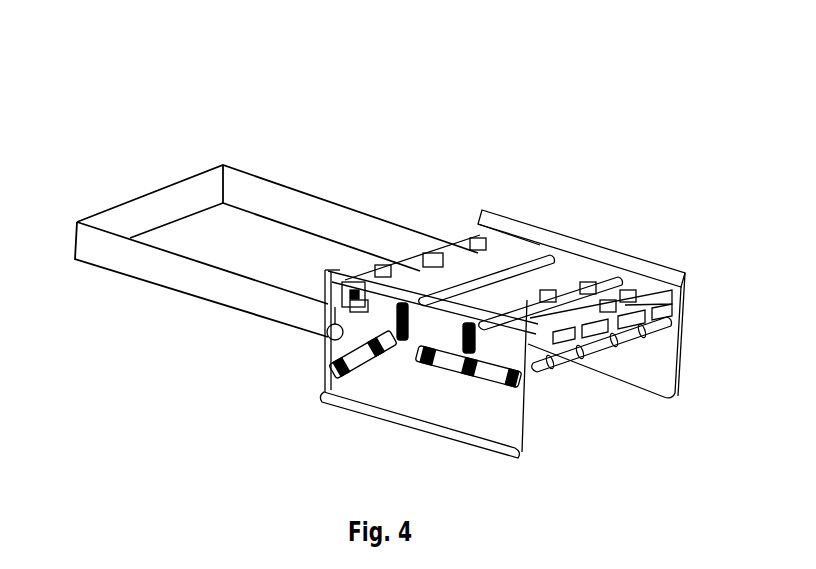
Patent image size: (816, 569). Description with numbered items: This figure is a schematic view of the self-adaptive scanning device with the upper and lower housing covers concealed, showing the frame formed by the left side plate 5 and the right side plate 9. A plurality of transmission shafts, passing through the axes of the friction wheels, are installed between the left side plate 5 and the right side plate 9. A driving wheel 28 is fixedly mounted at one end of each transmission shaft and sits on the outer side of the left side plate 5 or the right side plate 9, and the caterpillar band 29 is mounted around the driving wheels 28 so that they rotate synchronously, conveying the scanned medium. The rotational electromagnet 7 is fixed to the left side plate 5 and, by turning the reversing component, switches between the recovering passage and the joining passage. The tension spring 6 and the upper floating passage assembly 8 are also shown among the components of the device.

The left side plate 5 is at (503, 335).
The tension spring 6 is at (387, 348).
The rotational electromagnet 7 is at (327, 313).
The upper floating passage assembly 8 is at (478, 272).
The right side plate 9 is at (502, 212).
The driving wheel 28 is at (513, 388).
The caterpillar band 29 is at (335, 357).